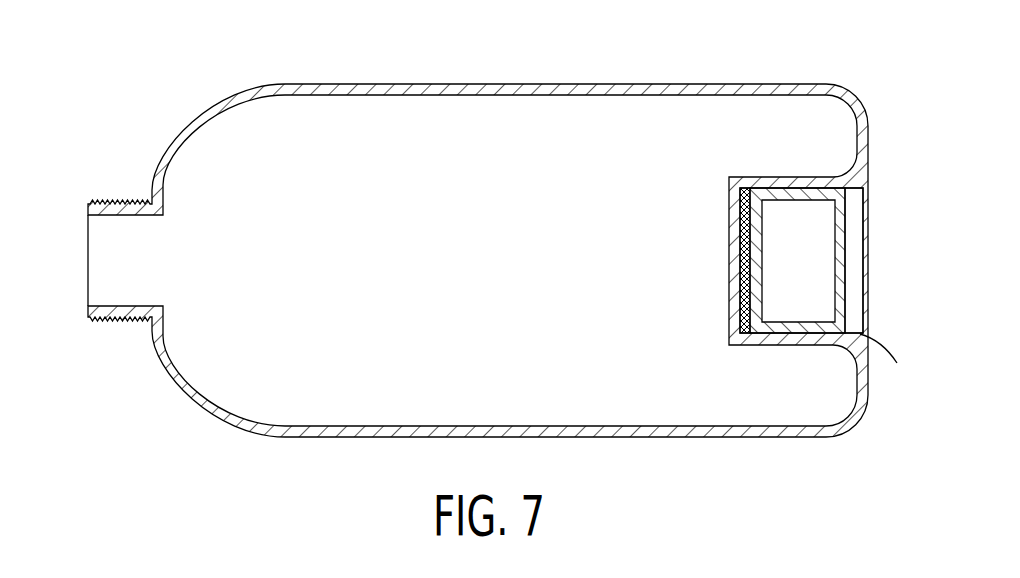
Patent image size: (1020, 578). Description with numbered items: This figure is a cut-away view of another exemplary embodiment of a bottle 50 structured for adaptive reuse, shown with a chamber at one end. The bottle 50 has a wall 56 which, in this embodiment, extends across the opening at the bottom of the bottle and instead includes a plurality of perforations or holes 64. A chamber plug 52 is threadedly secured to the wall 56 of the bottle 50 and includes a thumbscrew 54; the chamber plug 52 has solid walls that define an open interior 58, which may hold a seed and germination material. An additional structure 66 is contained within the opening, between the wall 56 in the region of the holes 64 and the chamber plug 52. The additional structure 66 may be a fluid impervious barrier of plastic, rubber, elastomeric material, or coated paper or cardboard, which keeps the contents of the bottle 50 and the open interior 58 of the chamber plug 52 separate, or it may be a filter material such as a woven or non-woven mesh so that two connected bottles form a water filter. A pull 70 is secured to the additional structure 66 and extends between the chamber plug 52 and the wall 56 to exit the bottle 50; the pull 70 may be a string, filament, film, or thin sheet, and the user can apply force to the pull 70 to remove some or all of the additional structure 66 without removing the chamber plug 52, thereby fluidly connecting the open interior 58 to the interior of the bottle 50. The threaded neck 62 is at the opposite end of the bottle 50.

The bottle 50 is at (586, 67).
The chamber plug 52 is at (838, 194).
The thumbscrew 54 is at (857, 247).
The wall 56 is at (778, 186).
The open interior 58 is at (820, 267).
The threaded neck 62 is at (118, 188).
The perforations or holes 64 is at (740, 218).
The additional structure 66 is at (730, 188).
The pull 70 is at (887, 367).